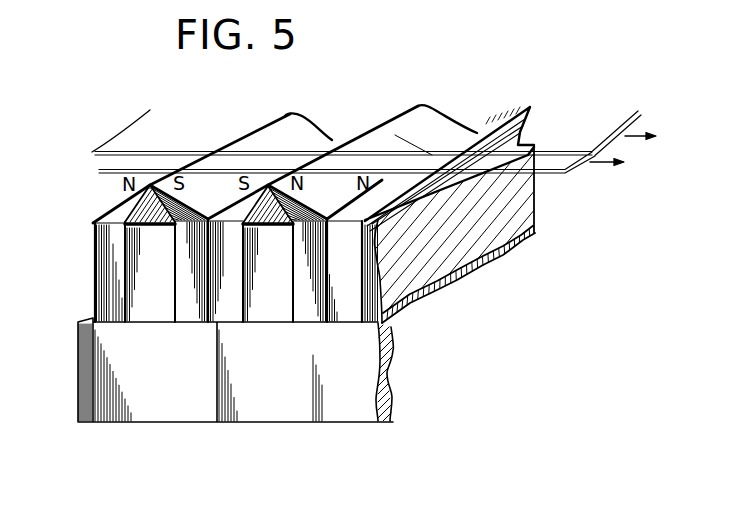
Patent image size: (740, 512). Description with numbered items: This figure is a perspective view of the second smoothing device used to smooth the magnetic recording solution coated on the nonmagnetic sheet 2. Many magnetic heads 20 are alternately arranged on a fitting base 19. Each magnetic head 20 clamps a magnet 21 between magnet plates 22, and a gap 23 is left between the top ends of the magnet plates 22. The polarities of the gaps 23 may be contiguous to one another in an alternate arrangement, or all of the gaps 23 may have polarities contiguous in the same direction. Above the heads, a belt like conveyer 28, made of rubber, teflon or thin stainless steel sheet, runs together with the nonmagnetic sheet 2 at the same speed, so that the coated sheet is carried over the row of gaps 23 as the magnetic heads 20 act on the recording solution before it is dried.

The nonmagnetic sheet 2 is at (127, 130).
The fitting base 19 is at (363, 375).
The magnetic head 20 is at (112, 205).
The magnet 21 is at (488, 233).
The magnet plates 22 is at (312, 315).
The gap 23 is at (151, 182).
The belt like conveyer 28 is at (109, 169).